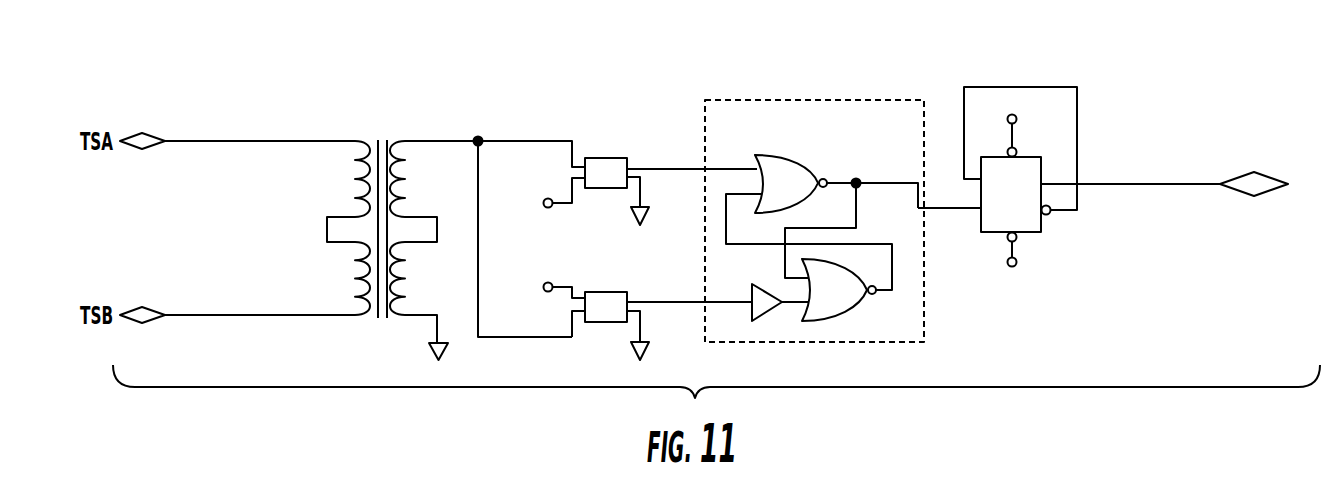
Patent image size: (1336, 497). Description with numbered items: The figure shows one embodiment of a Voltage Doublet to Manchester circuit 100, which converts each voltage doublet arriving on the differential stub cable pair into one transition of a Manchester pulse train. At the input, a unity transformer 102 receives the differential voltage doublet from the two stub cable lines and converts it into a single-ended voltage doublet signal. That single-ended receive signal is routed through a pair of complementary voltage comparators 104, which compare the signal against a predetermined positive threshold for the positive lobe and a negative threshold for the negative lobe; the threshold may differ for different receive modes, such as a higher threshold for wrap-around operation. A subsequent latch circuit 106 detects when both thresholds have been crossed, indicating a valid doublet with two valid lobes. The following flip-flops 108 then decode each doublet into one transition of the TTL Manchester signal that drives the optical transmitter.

The Voltage Doublet to Manchester circuit 100 is at (332, 52).
The unity transformer 102 is at (378, 324).
The complementary voltage comparators 104 is at (627, 160).
The latch circuit 106 is at (925, 265).
The flip-flops 108 is at (1042, 222).